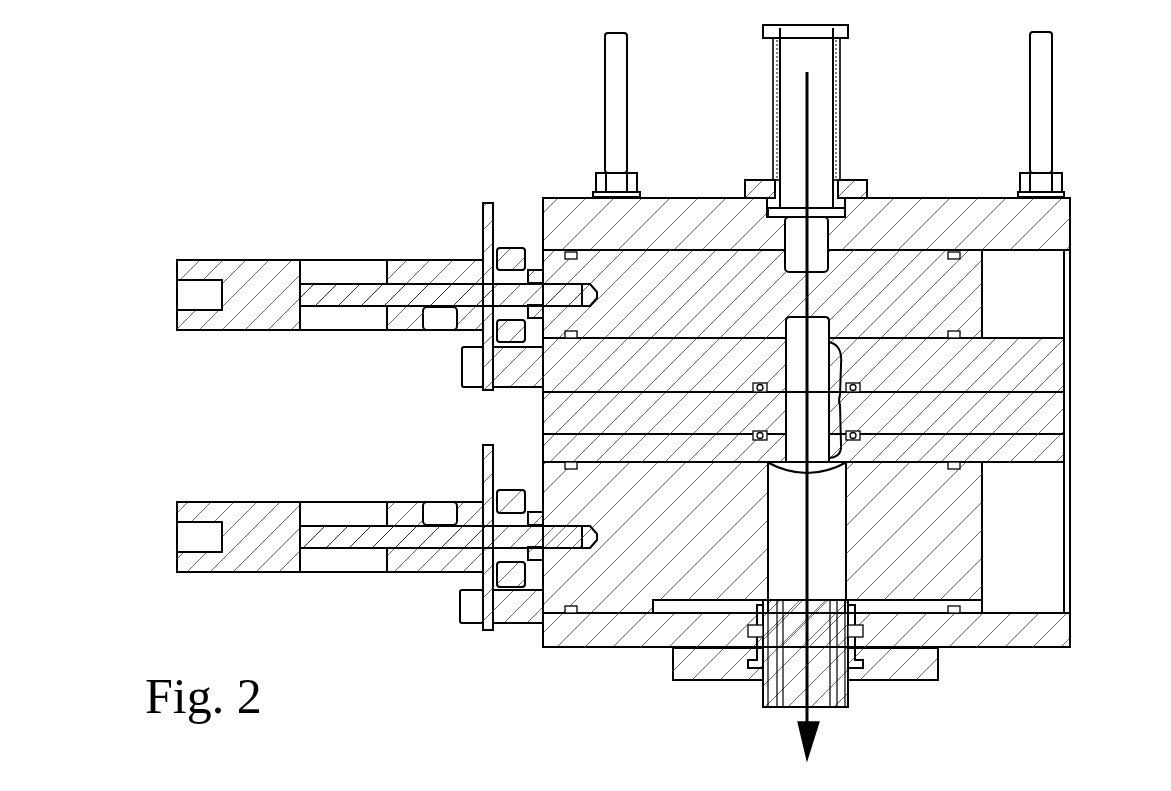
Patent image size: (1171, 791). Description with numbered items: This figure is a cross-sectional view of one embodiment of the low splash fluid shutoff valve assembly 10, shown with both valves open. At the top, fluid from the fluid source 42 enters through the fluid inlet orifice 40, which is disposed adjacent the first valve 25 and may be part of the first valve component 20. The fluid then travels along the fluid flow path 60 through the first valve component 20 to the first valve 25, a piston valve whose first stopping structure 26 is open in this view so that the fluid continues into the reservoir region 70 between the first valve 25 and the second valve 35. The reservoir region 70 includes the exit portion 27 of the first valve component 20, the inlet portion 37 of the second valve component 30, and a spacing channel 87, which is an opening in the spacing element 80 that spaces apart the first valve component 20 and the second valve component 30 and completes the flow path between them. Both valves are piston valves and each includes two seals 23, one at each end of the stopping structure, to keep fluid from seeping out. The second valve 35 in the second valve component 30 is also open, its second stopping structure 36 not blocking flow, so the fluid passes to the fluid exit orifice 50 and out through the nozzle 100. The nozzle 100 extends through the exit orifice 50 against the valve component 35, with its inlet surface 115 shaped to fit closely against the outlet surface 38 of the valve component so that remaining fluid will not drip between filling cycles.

The low splash fluid shutoff valve assembly 10 is at (444, 184).
The first valve component 20 is at (968, 210).
The seal 23 is at (567, 254).
The first valve 25 is at (970, 280).
The first stopping structure 26 is at (728, 278).
The exit portion 27 is at (797, 357).
The second valve component 30 is at (1043, 633).
The second valve 35 is at (972, 518).
The second stopping structure 36 is at (757, 537).
The inlet portion 37 is at (793, 442).
The outlet surface 38 is at (670, 606).
The fluid inlet orifice 40 is at (836, 170).
The fluid source 42 is at (838, 68).
The fluid exit orifice 50 is at (800, 600).
The fluid flow path 60 is at (815, 203).
The reservoir region 70 is at (840, 400).
The spacing element 80 is at (1062, 415).
The spacing channel 87 is at (797, 410).
The nozzle 100 is at (850, 687).
The inlet surface 115 is at (848, 603).